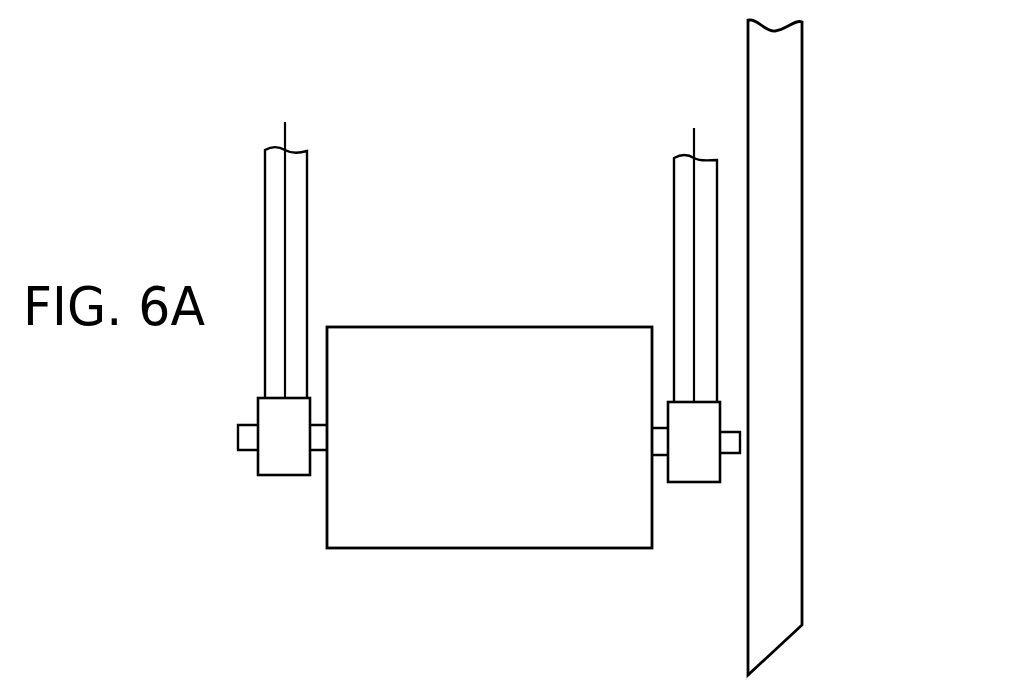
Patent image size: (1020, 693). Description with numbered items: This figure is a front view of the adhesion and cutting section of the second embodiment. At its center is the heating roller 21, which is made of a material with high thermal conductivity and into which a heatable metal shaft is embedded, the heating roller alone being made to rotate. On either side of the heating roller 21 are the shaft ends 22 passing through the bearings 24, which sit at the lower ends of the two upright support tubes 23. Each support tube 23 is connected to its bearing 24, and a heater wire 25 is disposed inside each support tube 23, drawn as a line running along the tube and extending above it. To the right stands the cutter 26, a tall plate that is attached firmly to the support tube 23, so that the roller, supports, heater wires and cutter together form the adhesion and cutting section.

The heating roller 21 is at (411, 535).
The shaft 22 is at (247, 442).
The support tube 23 is at (307, 215).
The bearing 24 is at (285, 467).
The heater wire 25 is at (287, 133).
The cutter 26 is at (803, 255).